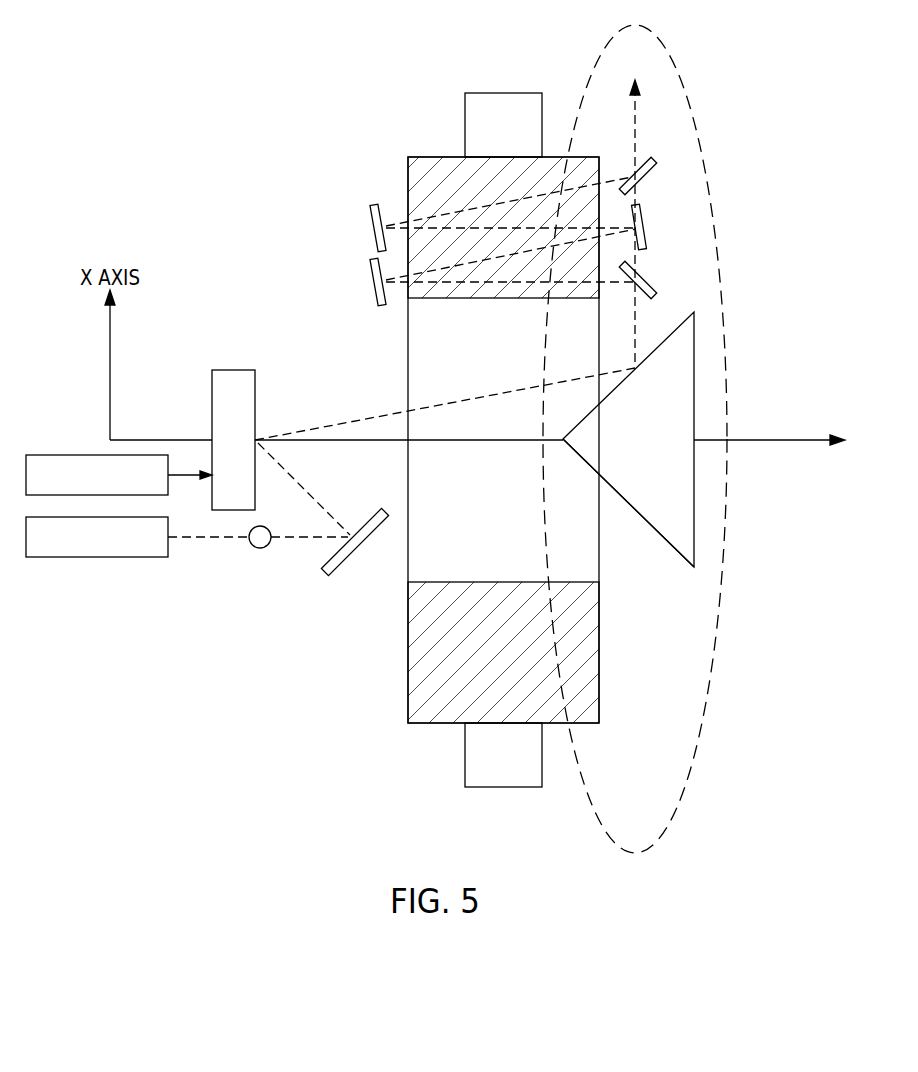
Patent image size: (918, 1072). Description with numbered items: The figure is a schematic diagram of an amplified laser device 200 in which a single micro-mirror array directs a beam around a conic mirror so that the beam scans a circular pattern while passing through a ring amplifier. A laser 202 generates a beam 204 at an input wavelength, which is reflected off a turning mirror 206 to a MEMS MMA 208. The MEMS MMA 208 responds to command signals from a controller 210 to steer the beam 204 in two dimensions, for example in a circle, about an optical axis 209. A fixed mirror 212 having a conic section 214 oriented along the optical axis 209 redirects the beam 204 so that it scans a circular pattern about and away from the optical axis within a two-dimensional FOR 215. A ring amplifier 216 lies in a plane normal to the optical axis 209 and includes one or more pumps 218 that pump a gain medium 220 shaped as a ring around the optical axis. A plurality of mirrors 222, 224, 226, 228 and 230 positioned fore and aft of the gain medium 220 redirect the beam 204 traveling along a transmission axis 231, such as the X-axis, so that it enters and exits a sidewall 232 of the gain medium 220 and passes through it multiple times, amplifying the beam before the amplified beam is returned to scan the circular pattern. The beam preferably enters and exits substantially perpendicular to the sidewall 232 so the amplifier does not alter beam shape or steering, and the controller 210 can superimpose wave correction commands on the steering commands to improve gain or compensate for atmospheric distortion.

The laser device 200 is at (122, 118).
The laser 202 is at (97, 558).
The beam 204 is at (257, 548).
The turning mirror 206 is at (361, 549).
The MEMS MMA 208 is at (231, 369).
The optical axis 209 is at (768, 443).
The controller 210 is at (97, 454).
The fixed mirror 212 is at (714, 542).
The conic section 214 is at (637, 513).
The two-dimensional FOR 215 is at (694, 114).
The ring amplifier 216 is at (632, 648).
The pump 218 is at (464, 750).
The gain medium 220 is at (521, 666).
The mirror 222 is at (645, 284).
The mirror 224 is at (373, 285).
The mirror 226 is at (646, 229).
The mirror 228 is at (373, 230).
The mirror 230 is at (643, 180).
The transmission axis 231 is at (633, 335).
The sidewall 232 is at (396, 174).